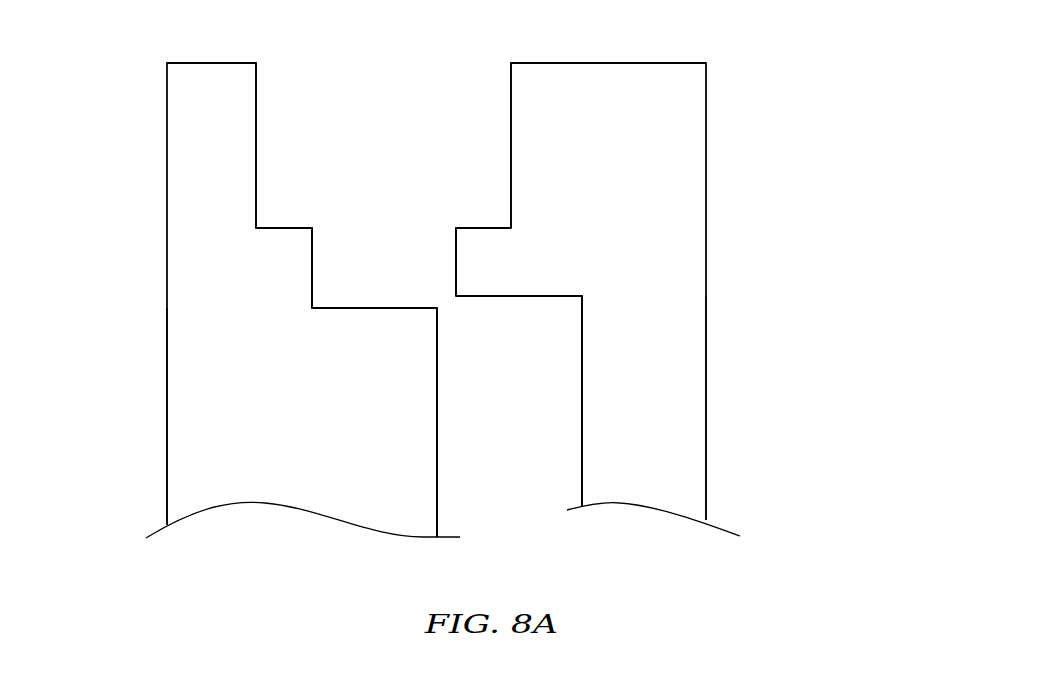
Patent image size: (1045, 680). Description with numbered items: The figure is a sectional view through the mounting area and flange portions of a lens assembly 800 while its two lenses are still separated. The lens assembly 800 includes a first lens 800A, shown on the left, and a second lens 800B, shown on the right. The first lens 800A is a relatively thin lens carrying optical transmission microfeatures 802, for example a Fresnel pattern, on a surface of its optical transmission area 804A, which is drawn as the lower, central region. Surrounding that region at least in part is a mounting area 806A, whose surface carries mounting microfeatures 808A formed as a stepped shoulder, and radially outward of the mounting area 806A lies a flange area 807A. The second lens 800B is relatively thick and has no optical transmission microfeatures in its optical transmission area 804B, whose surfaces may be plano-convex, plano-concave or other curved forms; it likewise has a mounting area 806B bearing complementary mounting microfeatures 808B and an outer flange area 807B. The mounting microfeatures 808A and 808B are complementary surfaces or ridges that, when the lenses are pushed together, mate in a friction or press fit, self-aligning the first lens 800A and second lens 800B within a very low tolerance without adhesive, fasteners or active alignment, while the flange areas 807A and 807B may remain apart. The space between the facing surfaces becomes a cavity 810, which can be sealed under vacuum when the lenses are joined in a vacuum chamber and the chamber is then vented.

The lens assembly 800 is at (883, 132).
The first lens 800A is at (212, 63).
The second lens 800B is at (615, 63).
The flange area 807A is at (107, 117).
The flange area 807B is at (758, 110).
The mounting area 806A is at (134, 244).
The mounting area 806B is at (748, 243).
The optical transmission area 804A is at (130, 460).
The optical transmission area 804B is at (750, 460).
The mounting microfeatures 808A is at (312, 268).
The mounting microfeatures 808B is at (456, 262).
The cavity 810 is at (516, 432).
The optical transmission microfeatures 802 is at (438, 480).